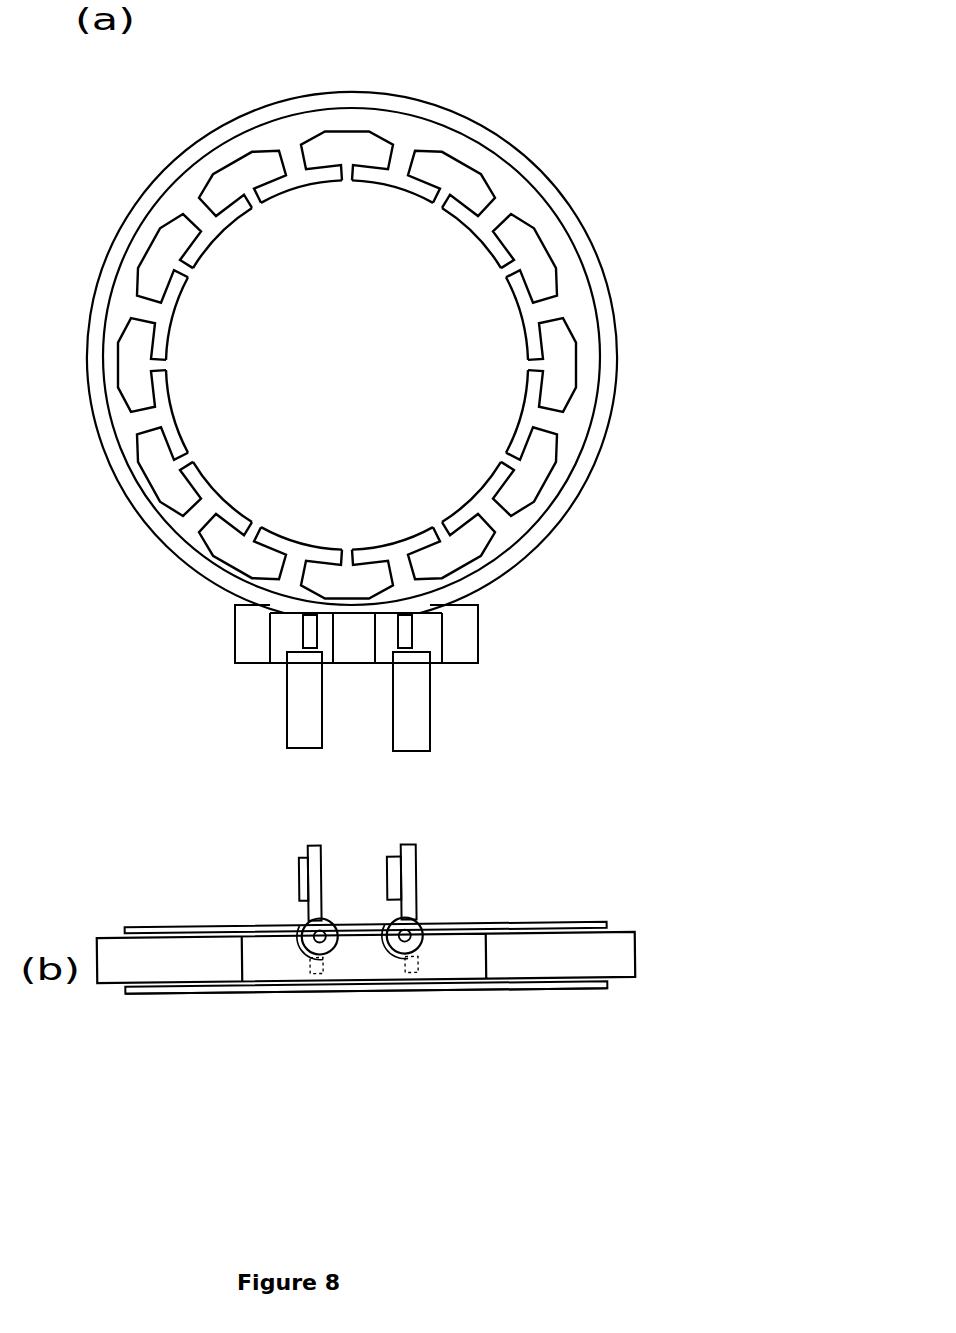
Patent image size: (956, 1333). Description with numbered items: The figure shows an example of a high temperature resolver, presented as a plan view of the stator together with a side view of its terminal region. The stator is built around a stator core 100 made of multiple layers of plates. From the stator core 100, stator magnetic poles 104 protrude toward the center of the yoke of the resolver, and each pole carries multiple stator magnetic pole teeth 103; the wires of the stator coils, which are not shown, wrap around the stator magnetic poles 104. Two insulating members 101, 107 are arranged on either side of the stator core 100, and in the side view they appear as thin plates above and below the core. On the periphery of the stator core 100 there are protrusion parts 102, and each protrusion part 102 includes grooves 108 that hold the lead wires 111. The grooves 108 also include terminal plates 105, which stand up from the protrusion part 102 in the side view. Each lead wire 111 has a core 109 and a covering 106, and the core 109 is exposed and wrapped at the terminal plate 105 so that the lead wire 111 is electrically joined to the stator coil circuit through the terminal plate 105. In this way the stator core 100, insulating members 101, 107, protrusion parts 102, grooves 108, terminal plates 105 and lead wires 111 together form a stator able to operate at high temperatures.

The stator core 100 is at (590, 477).
The insulating member 101 is at (190, 533).
The protrusion part 102 is at (250, 627).
The stator magnetic pole tooth 103 is at (177, 293).
The stator magnetic pole 104 is at (150, 419).
The terminal plate 105 is at (288, 746).
The covering 106 is at (388, 948).
The insulating member 107 is at (573, 987).
The groove 108 is at (287, 633).
The core 109 is at (318, 953).
The lead wire 111 is at (308, 697).